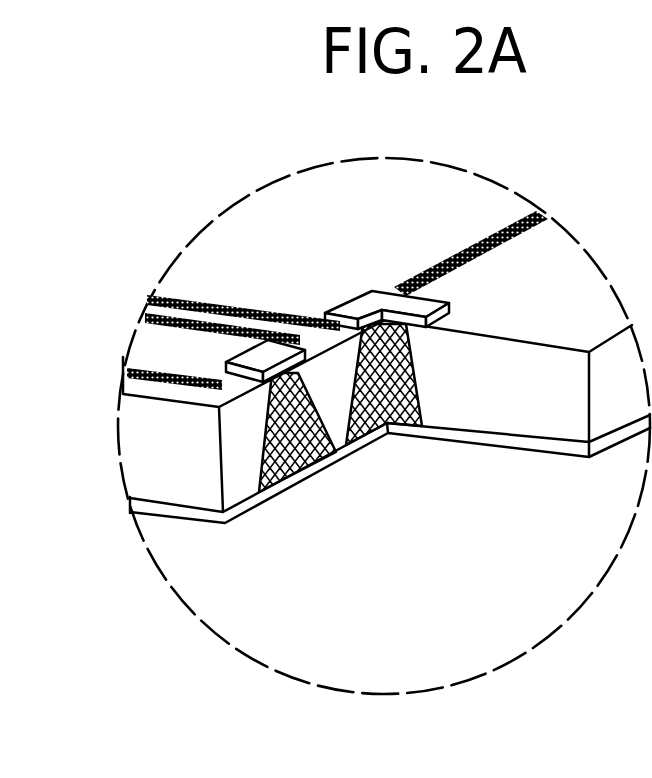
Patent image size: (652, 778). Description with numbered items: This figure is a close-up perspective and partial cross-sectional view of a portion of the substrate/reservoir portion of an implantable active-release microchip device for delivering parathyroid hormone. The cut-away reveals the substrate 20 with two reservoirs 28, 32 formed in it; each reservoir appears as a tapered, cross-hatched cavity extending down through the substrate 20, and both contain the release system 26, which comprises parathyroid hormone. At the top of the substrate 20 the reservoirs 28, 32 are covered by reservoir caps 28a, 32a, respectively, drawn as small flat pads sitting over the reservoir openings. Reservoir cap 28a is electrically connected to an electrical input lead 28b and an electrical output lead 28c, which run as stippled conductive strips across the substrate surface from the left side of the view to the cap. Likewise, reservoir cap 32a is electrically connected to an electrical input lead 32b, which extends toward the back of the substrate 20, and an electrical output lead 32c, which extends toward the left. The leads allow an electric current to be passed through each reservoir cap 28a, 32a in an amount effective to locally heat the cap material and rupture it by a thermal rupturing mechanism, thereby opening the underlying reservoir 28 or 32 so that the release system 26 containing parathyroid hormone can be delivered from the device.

The substrate 20 is at (518, 407).
The release system 26 is at (267, 437).
The reservoir 28 is at (292, 455).
The reservoir cap 28a is at (258, 358).
The electrical input lead 28b is at (222, 382).
The electrical output lead 28c is at (146, 314).
The reservoir 32 is at (380, 410).
The reservoir cap 32a is at (373, 297).
The electrical input lead 32b is at (548, 215).
The electrical output lead 32c is at (190, 296).